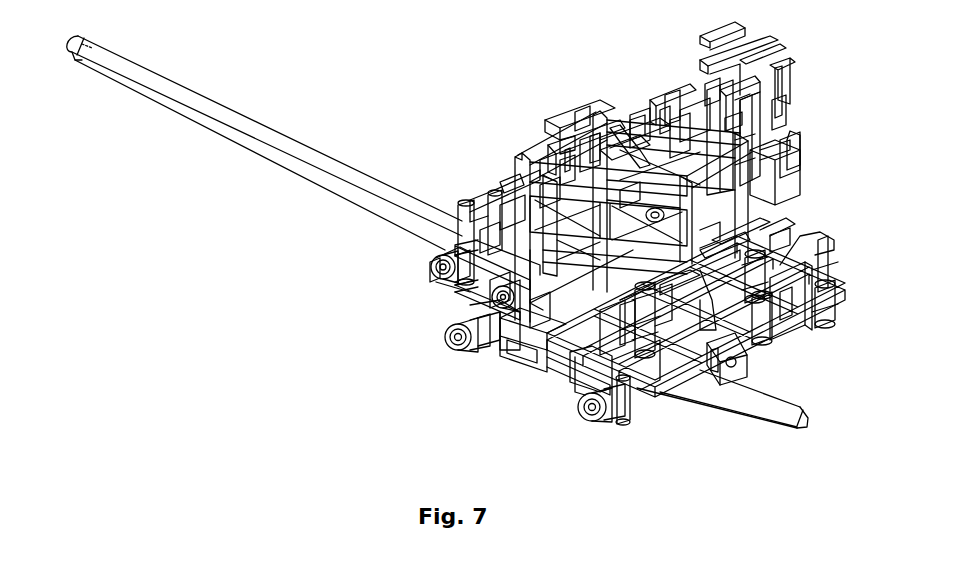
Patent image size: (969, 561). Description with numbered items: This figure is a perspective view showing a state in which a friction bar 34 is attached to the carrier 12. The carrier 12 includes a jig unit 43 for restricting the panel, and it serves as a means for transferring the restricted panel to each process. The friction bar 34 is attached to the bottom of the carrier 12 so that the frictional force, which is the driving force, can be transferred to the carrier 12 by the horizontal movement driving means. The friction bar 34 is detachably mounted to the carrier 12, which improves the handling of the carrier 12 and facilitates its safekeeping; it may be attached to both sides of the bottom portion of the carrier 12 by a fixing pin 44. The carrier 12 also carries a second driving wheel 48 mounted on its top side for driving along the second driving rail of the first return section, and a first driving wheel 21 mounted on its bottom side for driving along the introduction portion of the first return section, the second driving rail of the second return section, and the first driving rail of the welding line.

The carrier 12 is at (638, 90).
The first driving wheel 21 is at (452, 348).
The friction bar 34 is at (252, 115).
The jig unit 43 is at (565, 140).
The fixing pin 44 is at (748, 362).
The second driving wheel 48 is at (480, 300).